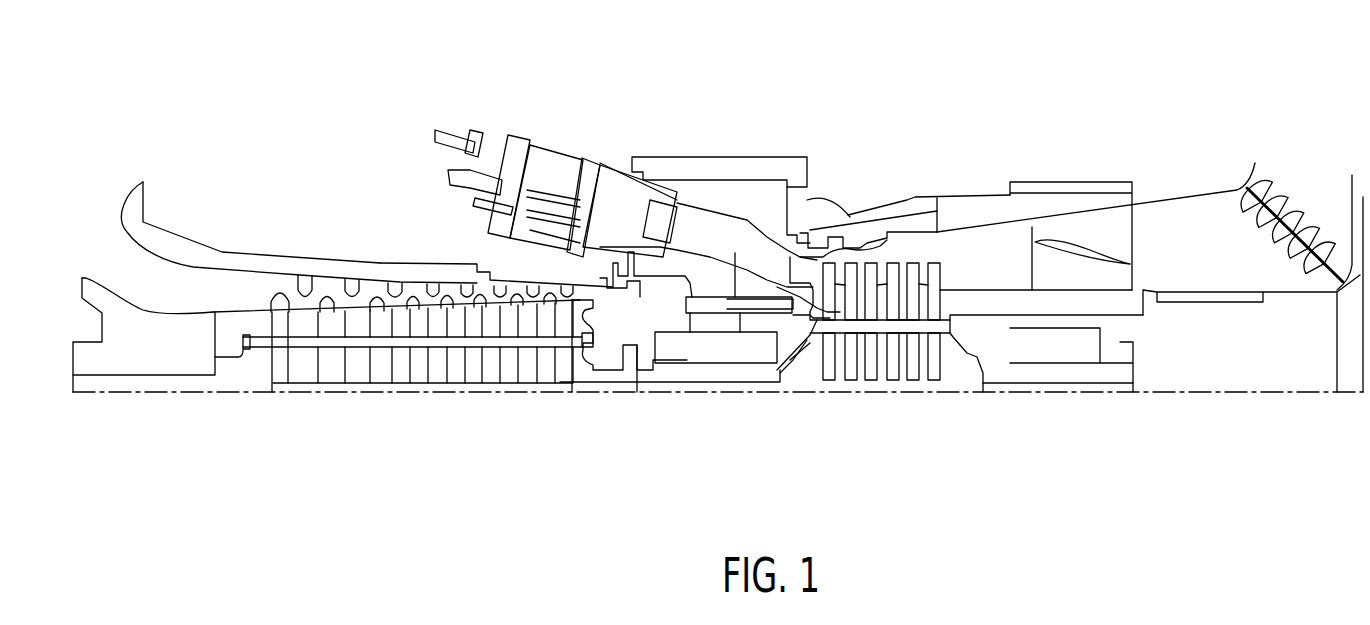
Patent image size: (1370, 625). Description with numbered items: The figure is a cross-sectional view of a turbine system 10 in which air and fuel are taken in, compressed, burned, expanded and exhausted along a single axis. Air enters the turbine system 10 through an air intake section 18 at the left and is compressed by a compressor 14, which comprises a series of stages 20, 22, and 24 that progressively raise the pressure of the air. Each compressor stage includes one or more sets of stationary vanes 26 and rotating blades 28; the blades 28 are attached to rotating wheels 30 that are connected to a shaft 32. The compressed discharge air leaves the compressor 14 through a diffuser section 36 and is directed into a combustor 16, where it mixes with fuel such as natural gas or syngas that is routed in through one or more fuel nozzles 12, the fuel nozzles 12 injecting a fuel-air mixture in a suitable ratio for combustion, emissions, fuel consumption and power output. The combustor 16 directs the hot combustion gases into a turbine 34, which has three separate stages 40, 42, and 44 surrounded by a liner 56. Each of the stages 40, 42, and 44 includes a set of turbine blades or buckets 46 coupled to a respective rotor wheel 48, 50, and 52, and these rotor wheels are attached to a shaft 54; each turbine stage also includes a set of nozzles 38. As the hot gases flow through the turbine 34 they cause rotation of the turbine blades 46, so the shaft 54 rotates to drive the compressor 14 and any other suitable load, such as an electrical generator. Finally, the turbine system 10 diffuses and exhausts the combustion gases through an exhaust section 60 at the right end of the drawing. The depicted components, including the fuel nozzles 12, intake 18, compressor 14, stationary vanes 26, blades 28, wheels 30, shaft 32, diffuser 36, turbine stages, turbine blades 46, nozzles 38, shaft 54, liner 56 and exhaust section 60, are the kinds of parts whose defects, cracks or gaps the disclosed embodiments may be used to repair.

The turbine system 10 is at (726, 60).
The fuel nozzles 12 is at (558, 183).
The compressor 14 is at (527, 250).
The combustor 16 is at (423, 144).
The air intake section 18 is at (140, 287).
The stage 20 is at (416, 396).
The stage 22 is at (488, 396).
The stage 24 is at (547, 396).
The stationary vanes 26 is at (302, 282).
The blades 28 is at (273, 288).
The rotating wheels 30 is at (280, 363).
The shaft 32 is at (305, 337).
The turbine 34 is at (920, 148).
The diffuser section 36 is at (685, 293).
The nozzles 38 is at (850, 298).
The stage 40 is at (855, 397).
The stage 42 is at (913, 397).
The stage 44 is at (963, 397).
The turbine blades 46 is at (873, 267).
The rotor wheel 48 is at (916, 253).
The rotor wheel 50 is at (870, 393).
The rotor wheel 52 is at (920, 393).
The shaft 54 is at (747, 373).
The liner 56 is at (817, 308).
The exhaust section 60 is at (1350, 147).